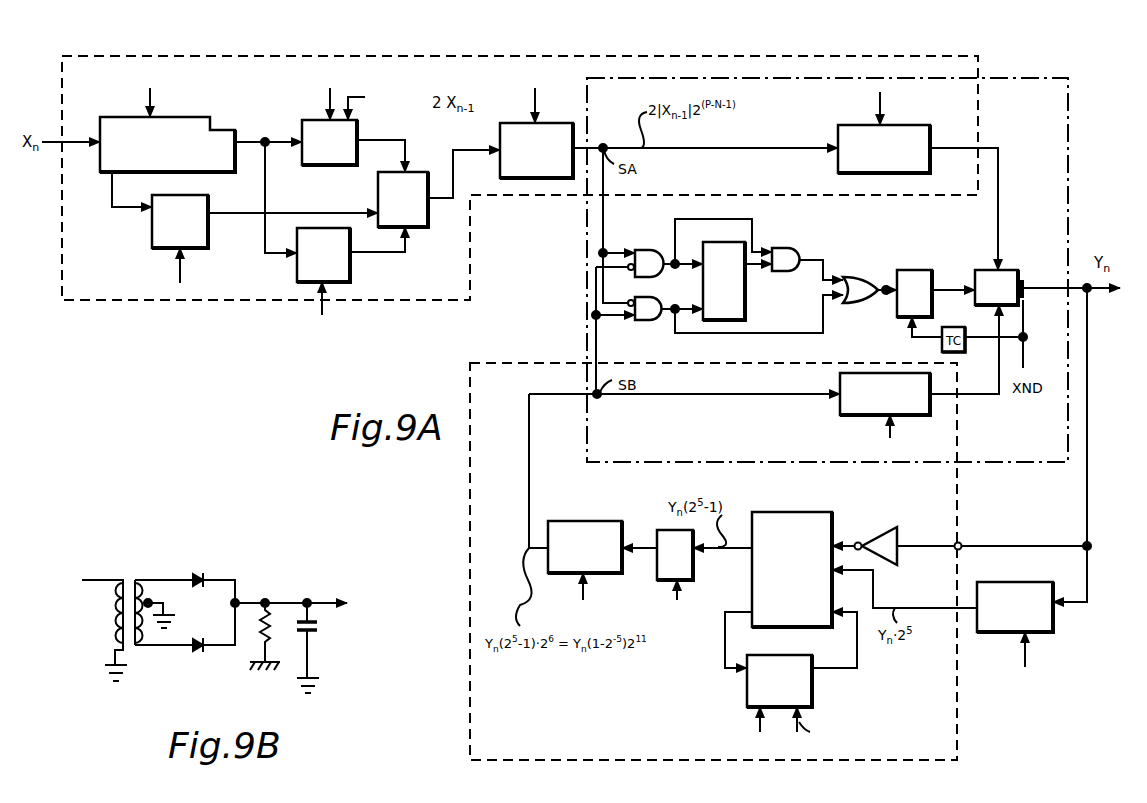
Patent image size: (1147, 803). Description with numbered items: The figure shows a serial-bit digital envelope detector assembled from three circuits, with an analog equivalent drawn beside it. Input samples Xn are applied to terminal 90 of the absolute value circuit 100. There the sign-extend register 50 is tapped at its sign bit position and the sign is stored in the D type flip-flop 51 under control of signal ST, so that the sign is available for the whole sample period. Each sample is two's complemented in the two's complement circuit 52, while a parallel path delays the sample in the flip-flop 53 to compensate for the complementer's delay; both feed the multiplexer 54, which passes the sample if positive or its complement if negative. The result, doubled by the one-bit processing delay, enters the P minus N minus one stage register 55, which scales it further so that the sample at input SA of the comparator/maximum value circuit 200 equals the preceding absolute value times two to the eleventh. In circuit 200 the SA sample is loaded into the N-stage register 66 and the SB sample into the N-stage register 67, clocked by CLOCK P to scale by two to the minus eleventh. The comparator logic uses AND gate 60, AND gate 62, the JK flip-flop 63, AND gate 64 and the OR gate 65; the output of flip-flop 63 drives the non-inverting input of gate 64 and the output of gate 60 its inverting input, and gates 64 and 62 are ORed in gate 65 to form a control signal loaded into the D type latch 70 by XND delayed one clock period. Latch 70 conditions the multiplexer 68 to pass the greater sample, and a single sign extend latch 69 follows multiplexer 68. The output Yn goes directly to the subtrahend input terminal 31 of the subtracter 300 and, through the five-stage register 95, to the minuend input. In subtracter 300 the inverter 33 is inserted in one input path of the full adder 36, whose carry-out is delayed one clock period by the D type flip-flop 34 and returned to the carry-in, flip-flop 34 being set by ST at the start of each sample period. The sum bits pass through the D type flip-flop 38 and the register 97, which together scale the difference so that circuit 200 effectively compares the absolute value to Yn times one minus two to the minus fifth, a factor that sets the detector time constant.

The subtrahend input terminal 31 is at (961, 543).
The inverter 33 is at (872, 533).
The D type flip-flop 34 is at (747, 700).
The full adder 36 is at (800, 512).
The D type flip-flop 38 is at (693, 575).
The sign-extend shift register (SXSR) 50 is at (198, 117).
The D type flip-flop 51 is at (208, 240).
The two's complement circuit 52 is at (304, 118).
The flip-flop 53 is at (350, 277).
The multiplexer 54 is at (378, 185).
The (P−N−1) stage register 55 is at (500, 172).
The AND gate 60 is at (648, 250).
The AND gate 62 is at (645, 320).
The JK flip-flop 63 is at (745, 297).
The AND gate 64 is at (790, 248).
The OR gate 65 is at (857, 277).
The N-stage register 66 is at (838, 170).
The N-stage register 67 is at (840, 412).
The multiplexer 68 is at (1016, 268).
The sign extend latch 69 is at (1027, 284).
The D type latch 70 is at (930, 270).
The input terminal 90 is at (72, 142).
The 5-stage register 95 is at (1053, 627).
The register 97 is at (584, 520).
The absolute value circuit 100 is at (400, 300).
The comparator/maximum value circuit 200 is at (1068, 150).
The subtracter circuit 300 is at (470, 518).